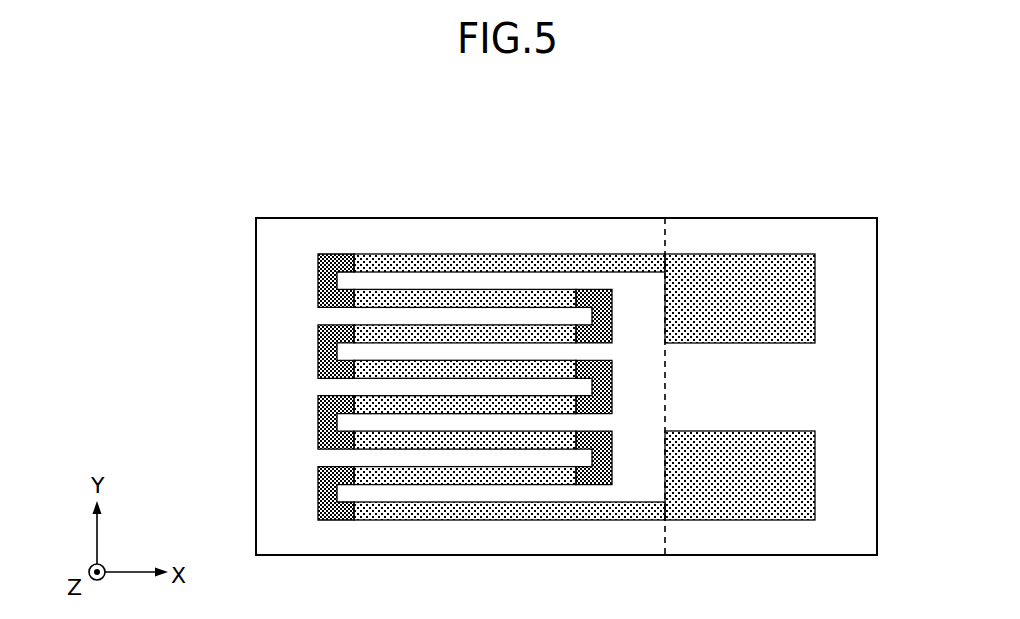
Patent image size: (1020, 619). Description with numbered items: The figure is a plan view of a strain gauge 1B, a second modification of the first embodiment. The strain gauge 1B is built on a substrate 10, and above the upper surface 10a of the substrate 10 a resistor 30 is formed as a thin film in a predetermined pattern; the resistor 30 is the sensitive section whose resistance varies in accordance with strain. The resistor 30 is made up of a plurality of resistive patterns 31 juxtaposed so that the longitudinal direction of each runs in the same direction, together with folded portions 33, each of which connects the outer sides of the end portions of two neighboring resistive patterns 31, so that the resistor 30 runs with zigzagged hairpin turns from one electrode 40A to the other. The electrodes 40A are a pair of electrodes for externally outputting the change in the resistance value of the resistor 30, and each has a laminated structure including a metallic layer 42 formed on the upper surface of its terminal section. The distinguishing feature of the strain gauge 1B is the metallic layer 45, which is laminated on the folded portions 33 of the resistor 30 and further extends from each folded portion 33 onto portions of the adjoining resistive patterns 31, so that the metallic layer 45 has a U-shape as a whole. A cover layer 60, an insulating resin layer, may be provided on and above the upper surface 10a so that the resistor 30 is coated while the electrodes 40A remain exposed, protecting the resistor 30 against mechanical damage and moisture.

The strain gauge 1B is at (161, 152).
The substrate 10 is at (290, 212).
The upper surface 10a is at (503, 238).
The resistor 30 is at (427, 320).
The resistive patterns 31 is at (410, 262).
The folded portions 33 is at (401, 338).
The electrodes 40A is at (757, 339).
The metallic layers 42 is at (740, 257).
The metallic layer 45 is at (332, 350).
The cover layer 60 is at (672, 240).